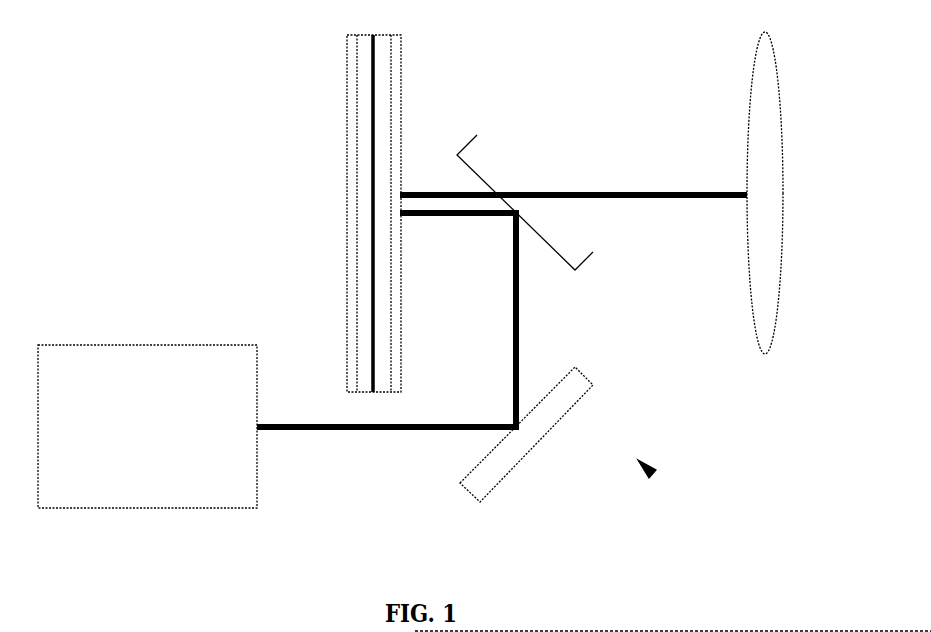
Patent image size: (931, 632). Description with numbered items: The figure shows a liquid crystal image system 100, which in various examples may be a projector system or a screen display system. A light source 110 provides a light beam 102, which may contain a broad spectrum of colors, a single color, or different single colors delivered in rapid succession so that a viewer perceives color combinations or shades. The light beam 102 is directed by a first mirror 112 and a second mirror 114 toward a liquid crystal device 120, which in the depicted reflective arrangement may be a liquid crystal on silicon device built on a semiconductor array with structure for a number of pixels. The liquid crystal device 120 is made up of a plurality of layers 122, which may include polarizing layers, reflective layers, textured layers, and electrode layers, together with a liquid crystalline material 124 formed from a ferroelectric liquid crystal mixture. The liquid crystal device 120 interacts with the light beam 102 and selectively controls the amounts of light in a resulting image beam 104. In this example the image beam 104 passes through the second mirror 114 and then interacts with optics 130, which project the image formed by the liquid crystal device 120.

The liquid crystal image system 100 is at (652, 474).
The light beam 102 is at (520, 336).
The image beam 104 is at (622, 193).
The light source 110 is at (152, 340).
The first mirror 112 is at (502, 468).
The second mirror 114 is at (490, 162).
The liquid crystal device 120 is at (323, 152).
The layers 122 is at (350, 82).
The liquid crystalline material 124 is at (375, 263).
The optics 130 is at (762, 332).